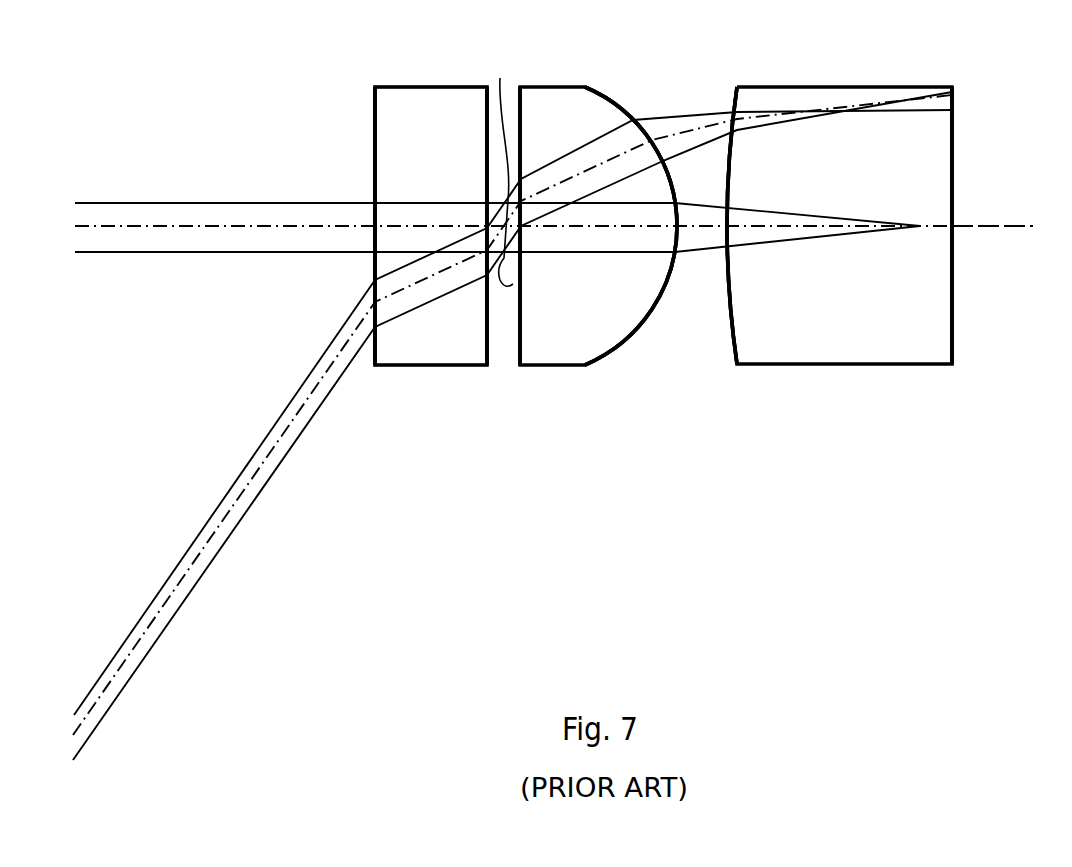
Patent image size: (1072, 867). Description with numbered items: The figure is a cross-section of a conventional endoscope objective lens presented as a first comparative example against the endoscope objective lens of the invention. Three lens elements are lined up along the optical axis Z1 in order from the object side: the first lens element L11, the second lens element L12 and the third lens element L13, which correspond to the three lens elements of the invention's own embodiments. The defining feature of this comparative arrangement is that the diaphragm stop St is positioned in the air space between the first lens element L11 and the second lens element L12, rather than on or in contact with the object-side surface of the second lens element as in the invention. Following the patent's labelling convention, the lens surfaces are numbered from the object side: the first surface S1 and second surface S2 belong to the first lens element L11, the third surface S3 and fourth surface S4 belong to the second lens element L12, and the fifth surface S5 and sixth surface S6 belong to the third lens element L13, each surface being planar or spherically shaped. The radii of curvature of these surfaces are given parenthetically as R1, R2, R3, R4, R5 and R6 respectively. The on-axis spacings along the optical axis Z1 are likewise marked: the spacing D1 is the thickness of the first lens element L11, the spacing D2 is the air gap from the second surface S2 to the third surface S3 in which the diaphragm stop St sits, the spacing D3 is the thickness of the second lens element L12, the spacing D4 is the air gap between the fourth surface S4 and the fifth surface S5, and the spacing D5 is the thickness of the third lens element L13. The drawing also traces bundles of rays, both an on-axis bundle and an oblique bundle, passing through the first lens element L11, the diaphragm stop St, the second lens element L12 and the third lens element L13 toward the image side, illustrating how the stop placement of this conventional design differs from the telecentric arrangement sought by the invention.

The first lens element L11 is at (428, 98).
The second lens element L12 is at (565, 100).
The third lens element L13 is at (798, 98).
The diaphragm stop St is at (500, 160).
The on-axis surface spacing D1 is at (411, 234).
The on-axis surface spacing D2 is at (528, 283).
The on-axis surface spacing D3 is at (614, 232).
The on-axis surface spacing D4 is at (698, 232).
The on-axis surface spacing D5 is at (803, 232).
The optical axis Z1 is at (1007, 232).
The lens surface S1 is at (374, 352).
The radius of curvature R1 is at (365, 282).
The lens surface S2 is at (487, 347).
The radius of curvature R2 is at (480, 285).
The lens surface S3 is at (519, 352).
The radius of curvature R3 is at (547, 293).
The lens surface S4 is at (623, 342).
The radius of curvature R4 is at (631, 280).
The lens surface S5 is at (737, 344).
The radius of curvature R5 is at (731, 280).
The lens surface S6 is at (952, 344).
The radius of curvature R6 is at (965, 280).